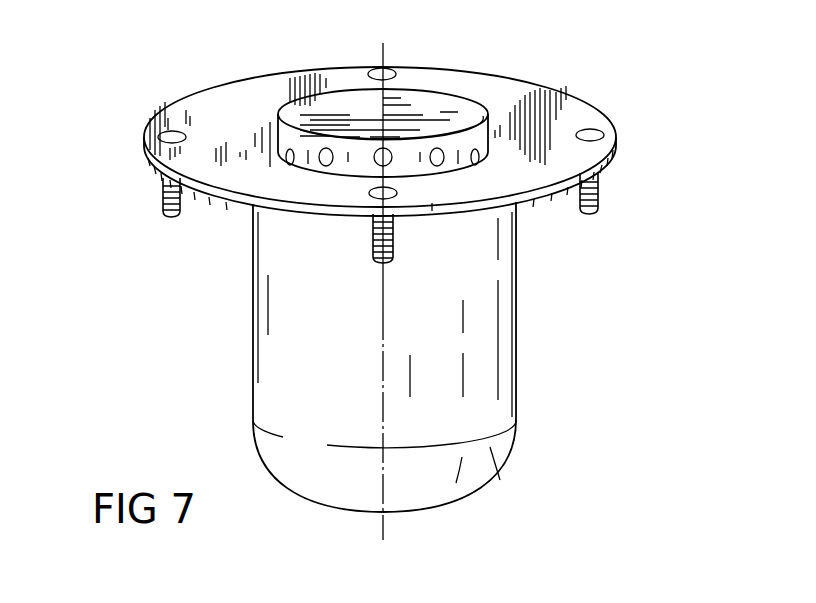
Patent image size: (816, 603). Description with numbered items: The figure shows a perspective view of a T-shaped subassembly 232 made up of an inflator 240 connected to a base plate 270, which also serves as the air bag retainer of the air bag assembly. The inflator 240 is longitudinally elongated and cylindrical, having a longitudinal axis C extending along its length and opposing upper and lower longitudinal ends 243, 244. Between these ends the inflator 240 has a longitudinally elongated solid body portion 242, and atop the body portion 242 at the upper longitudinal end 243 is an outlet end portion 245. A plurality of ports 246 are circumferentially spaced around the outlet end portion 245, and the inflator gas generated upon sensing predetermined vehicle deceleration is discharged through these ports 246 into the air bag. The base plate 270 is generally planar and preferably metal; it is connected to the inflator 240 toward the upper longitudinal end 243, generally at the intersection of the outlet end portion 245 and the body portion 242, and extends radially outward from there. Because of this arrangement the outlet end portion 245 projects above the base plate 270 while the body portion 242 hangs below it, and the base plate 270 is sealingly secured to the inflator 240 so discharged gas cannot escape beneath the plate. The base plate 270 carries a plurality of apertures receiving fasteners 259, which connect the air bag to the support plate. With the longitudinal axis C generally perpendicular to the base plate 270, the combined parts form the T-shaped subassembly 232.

The T-shaped subassembly 232 is at (162, 103).
The base plate 270 is at (593, 110).
The upper longitudinal end 243 is at (460, 120).
The outlet end portion 245 is at (448, 100).
The ports 246 is at (373, 153).
The fasteners 259 is at (162, 210).
The inflator 240 is at (390, 357).
The body portion 242 is at (273, 364).
The lower longitudinal end 244 is at (485, 468).
The longitudinal axis C is at (383, 50).